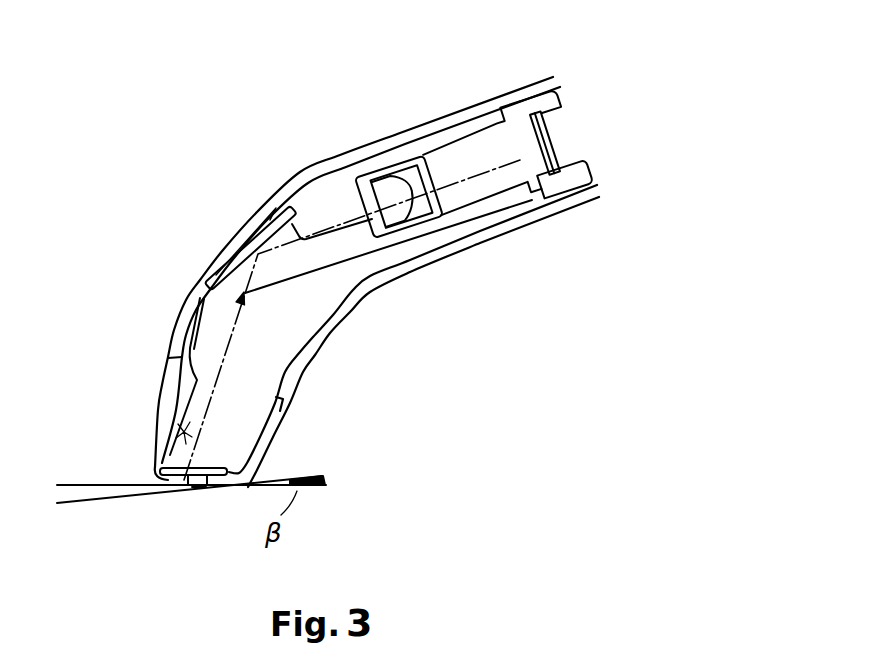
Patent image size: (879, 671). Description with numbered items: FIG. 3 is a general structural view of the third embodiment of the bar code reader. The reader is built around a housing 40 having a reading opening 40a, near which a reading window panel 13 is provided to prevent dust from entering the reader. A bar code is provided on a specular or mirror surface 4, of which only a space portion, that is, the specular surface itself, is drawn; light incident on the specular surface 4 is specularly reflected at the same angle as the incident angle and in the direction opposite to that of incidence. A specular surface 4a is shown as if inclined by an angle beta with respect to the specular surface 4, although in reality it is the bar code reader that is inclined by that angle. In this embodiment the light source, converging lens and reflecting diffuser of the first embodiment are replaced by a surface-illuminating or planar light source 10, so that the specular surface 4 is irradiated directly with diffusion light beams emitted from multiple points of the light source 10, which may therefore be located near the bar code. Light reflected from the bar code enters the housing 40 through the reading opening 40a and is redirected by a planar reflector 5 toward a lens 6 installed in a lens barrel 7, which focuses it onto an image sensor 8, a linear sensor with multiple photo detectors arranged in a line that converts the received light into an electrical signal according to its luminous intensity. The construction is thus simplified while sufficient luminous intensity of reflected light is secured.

The specular surface 4 is at (313, 490).
The specular surface 4a is at (316, 470).
The planar reflector 5 is at (287, 213).
The lens 6 is at (397, 181).
The lens barrel 7 is at (421, 158).
The image sensor 8 is at (522, 100).
The planar light source 10 is at (180, 397).
The reading window panel 13 is at (203, 480).
The housing 40 is at (189, 303).
The reading opening 40a is at (157, 475).